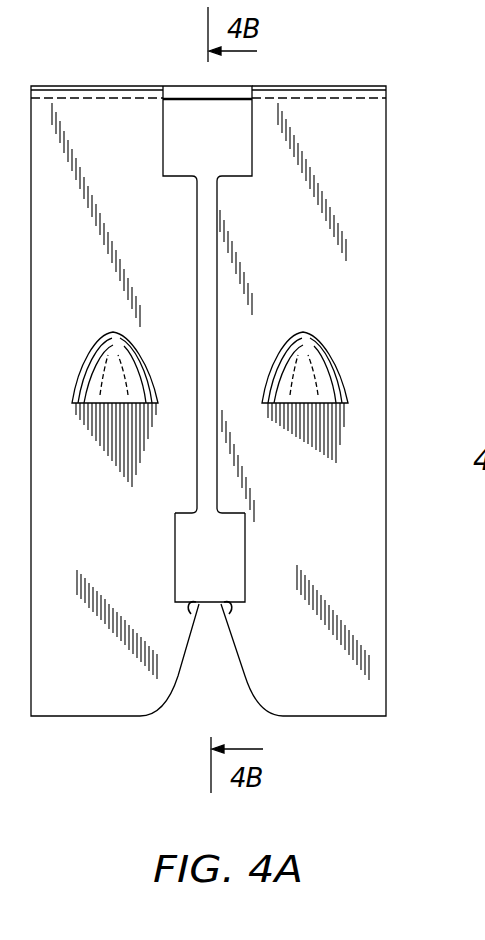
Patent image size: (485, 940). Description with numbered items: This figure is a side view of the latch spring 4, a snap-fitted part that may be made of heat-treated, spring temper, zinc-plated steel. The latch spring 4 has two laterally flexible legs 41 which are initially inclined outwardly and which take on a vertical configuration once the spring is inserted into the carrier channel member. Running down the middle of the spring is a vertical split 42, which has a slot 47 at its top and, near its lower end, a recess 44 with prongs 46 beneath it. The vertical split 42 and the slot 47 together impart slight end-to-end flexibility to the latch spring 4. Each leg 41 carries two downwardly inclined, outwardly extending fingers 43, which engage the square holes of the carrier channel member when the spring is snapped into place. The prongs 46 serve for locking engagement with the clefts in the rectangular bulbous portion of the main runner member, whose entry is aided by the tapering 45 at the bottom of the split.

The latch spring 4 is at (391, 187).
The legs 41 is at (113, 563).
The vertical split 42 is at (204, 272).
The fingers 43 is at (100, 355).
The recess 44 is at (231, 570).
The tapering 45 is at (244, 683).
The prongs 46 is at (225, 614).
The slot 47 is at (202, 92).